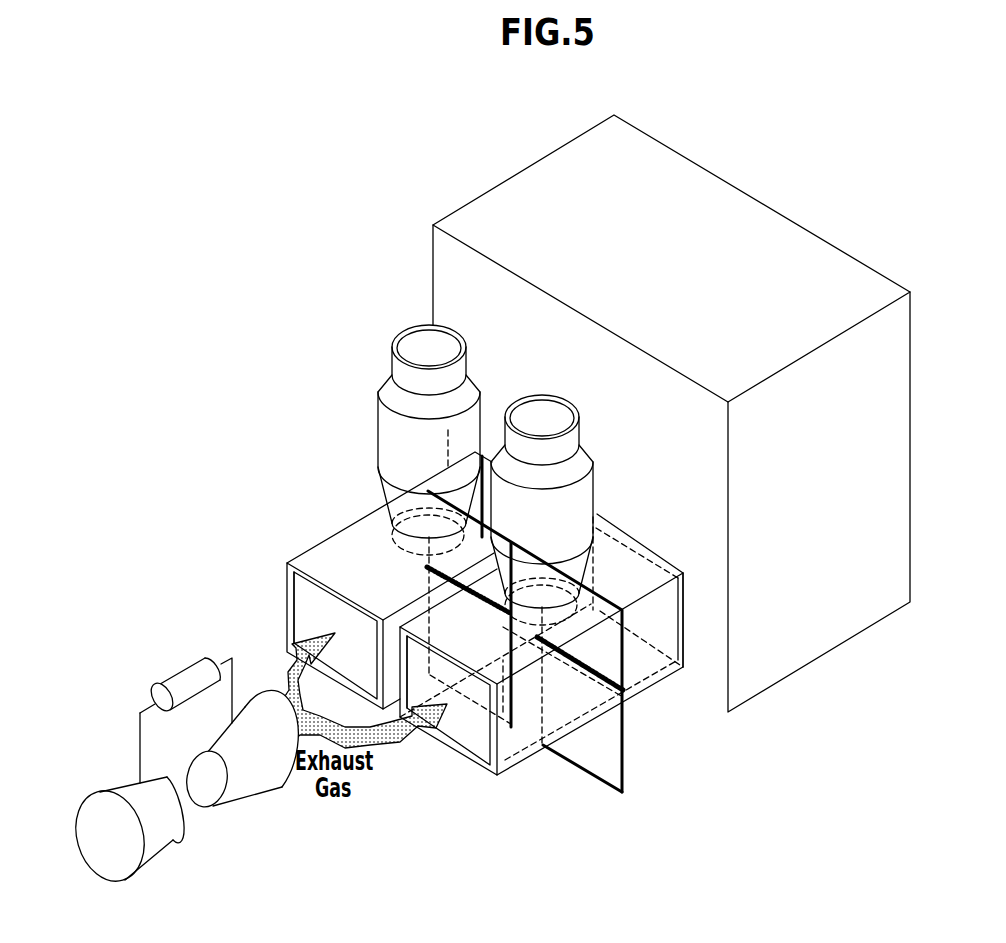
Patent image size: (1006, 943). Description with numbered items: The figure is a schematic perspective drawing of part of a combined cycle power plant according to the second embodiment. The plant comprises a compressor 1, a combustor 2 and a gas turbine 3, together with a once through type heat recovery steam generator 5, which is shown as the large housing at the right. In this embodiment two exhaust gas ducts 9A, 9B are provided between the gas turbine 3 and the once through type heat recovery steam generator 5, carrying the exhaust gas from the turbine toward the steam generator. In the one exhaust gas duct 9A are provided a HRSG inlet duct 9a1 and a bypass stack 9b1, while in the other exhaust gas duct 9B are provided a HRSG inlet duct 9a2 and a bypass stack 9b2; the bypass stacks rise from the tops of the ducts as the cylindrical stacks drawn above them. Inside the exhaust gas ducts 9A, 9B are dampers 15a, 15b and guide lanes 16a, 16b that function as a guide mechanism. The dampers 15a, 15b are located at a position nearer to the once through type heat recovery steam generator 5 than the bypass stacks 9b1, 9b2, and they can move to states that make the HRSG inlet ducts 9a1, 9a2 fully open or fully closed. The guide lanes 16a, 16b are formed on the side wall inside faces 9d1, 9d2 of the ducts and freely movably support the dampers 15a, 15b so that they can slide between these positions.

The compressor 1 is at (162, 842).
The combustor 2 is at (185, 677).
The gas turbine 3 is at (252, 787).
The once through type heat recovery steam generator 5 is at (882, 437).
The exhaust gas duct 9A is at (537, 757).
The exhaust gas duct 9B is at (289, 590).
The HRSG inlet duct 9a1 is at (655, 688).
The HRSG inlet duct 9a2 is at (448, 430).
The bypass stack 9b1 is at (577, 503).
The bypass stack 9b2 is at (387, 437).
The side wall inside face 9d1 is at (440, 683).
The side wall inside face 9d2 is at (305, 615).
The damper 15a is at (585, 760).
The damper 15b is at (503, 712).
The guide lane 16a is at (610, 640).
The guide lane 16b is at (382, 552).